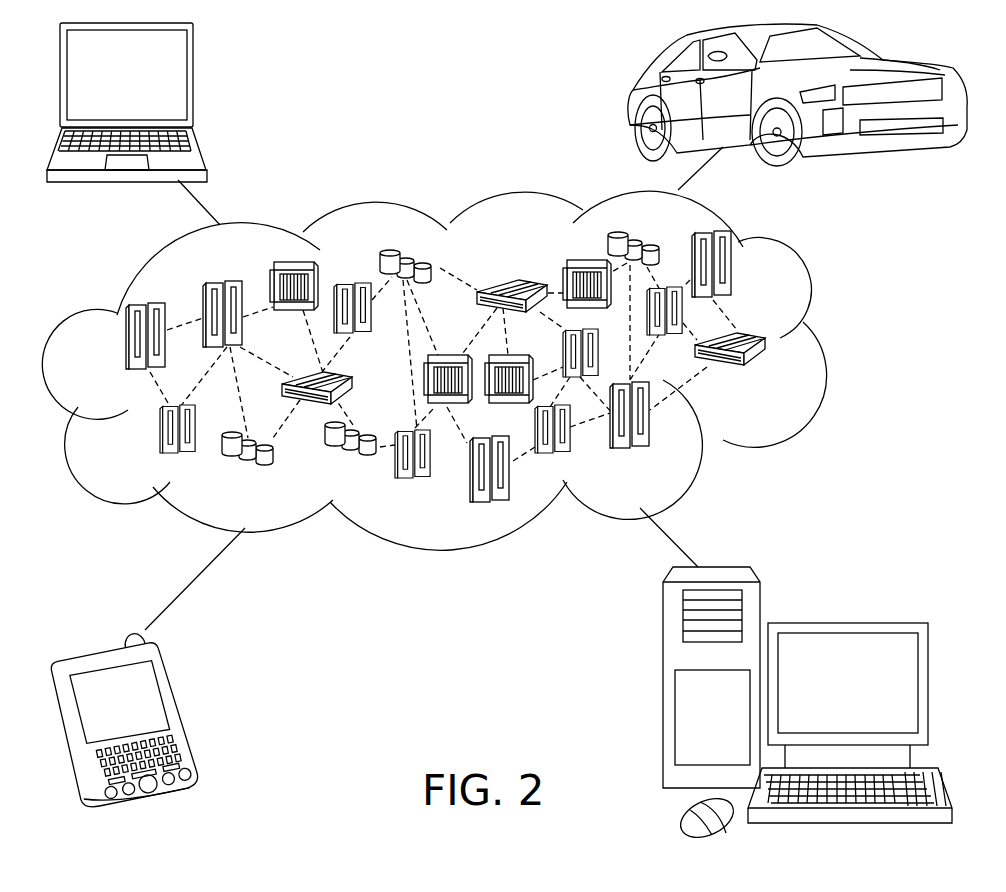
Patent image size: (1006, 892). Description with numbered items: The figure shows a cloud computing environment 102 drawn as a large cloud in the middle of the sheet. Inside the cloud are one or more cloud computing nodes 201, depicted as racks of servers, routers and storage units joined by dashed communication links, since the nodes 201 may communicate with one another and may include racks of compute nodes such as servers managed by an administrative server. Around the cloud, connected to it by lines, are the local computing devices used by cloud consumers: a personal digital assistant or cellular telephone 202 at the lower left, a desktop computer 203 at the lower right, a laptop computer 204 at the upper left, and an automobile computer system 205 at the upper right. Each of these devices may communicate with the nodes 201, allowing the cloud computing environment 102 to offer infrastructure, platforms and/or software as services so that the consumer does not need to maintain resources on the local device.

The cloud computing environment 102 is at (825, 343).
The cloud computing nodes 201 is at (350, 248).
The personal digital assistant (PDA) or cellular telephone 202 is at (183, 713).
The desktop computer 203 is at (847, 622).
The laptop computer 204 is at (192, 82).
The automobile computer system 205 is at (633, 98).